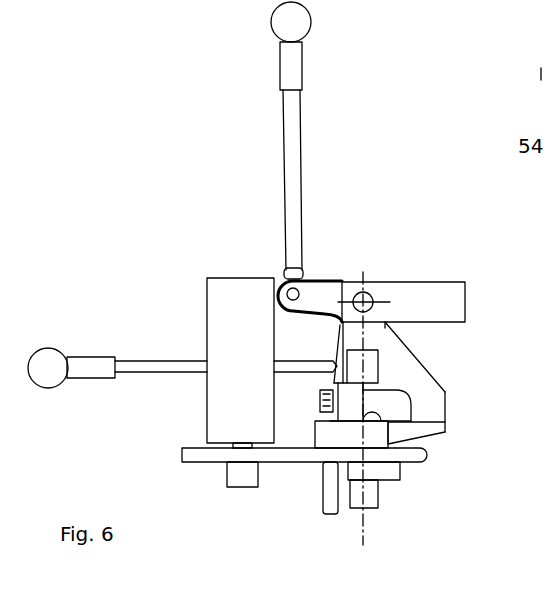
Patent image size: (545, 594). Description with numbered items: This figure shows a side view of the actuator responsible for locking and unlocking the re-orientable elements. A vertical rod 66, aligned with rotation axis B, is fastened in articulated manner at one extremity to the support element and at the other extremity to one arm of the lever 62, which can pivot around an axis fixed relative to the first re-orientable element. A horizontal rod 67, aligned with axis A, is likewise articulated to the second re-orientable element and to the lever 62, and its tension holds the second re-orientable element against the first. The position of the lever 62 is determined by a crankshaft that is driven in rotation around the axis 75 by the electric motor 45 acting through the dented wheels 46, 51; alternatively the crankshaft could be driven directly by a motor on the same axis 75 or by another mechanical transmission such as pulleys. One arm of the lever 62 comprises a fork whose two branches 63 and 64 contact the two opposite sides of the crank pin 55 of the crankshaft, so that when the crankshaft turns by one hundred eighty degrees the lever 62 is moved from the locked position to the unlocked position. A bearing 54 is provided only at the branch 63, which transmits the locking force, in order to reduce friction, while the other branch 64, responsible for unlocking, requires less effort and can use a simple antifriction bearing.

The vertical rod 66 is at (292, 145).
The electric motor 45 is at (232, 302).
The horizontal rod 67 is at (148, 367).
The lever 62 is at (407, 375).
The crank pin 55 is at (357, 405).
The fork branch 63 is at (400, 432).
The dented wheel 46 is at (182, 455).
The dented wheel 51 is at (427, 458).
The bearing 54 is at (330, 437).
The fork branch 64 is at (322, 410).
The axis 75 is at (365, 535).